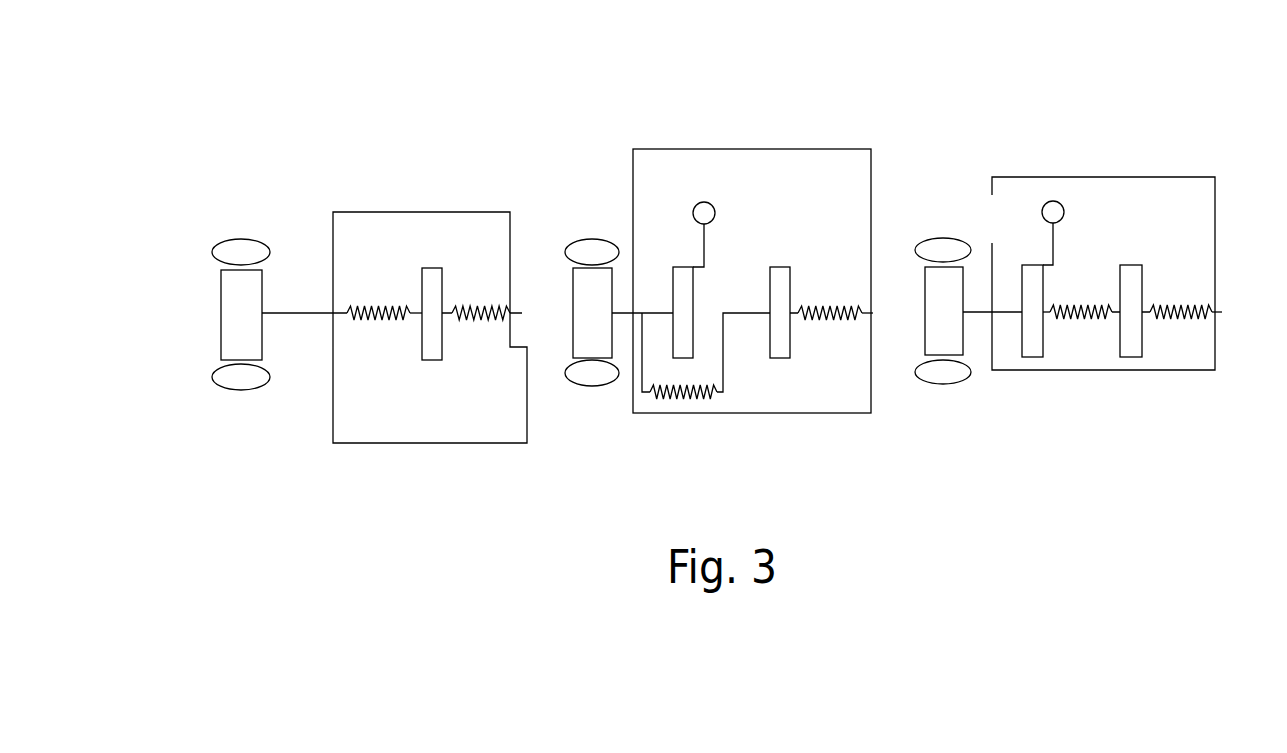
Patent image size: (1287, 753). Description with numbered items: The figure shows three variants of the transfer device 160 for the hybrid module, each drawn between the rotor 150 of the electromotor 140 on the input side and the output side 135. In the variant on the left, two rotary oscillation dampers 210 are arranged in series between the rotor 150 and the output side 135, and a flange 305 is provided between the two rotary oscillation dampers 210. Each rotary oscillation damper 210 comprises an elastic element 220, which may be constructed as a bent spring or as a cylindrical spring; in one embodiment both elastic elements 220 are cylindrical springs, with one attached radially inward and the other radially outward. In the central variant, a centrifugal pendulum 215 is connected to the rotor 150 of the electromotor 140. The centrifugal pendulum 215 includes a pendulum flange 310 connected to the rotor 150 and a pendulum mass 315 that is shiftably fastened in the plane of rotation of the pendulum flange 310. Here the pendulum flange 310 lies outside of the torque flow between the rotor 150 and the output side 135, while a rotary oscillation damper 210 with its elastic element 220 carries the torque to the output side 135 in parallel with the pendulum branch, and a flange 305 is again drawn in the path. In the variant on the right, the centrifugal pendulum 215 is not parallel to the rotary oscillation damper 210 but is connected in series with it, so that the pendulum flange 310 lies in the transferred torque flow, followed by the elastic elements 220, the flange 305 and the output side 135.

The output side 135 is at (520, 294).
The electromotor 140 is at (244, 222).
The rotor 150 is at (215, 350).
The transfer device 160 is at (464, 204).
The rotary oscillation damper 210 is at (365, 336).
The centrifugal pendulum 215 is at (696, 186).
The elastic element 220 is at (368, 307).
The flange 305 is at (435, 375).
The pendulum flange 310 is at (672, 277).
The pendulum mass 315 is at (717, 203).